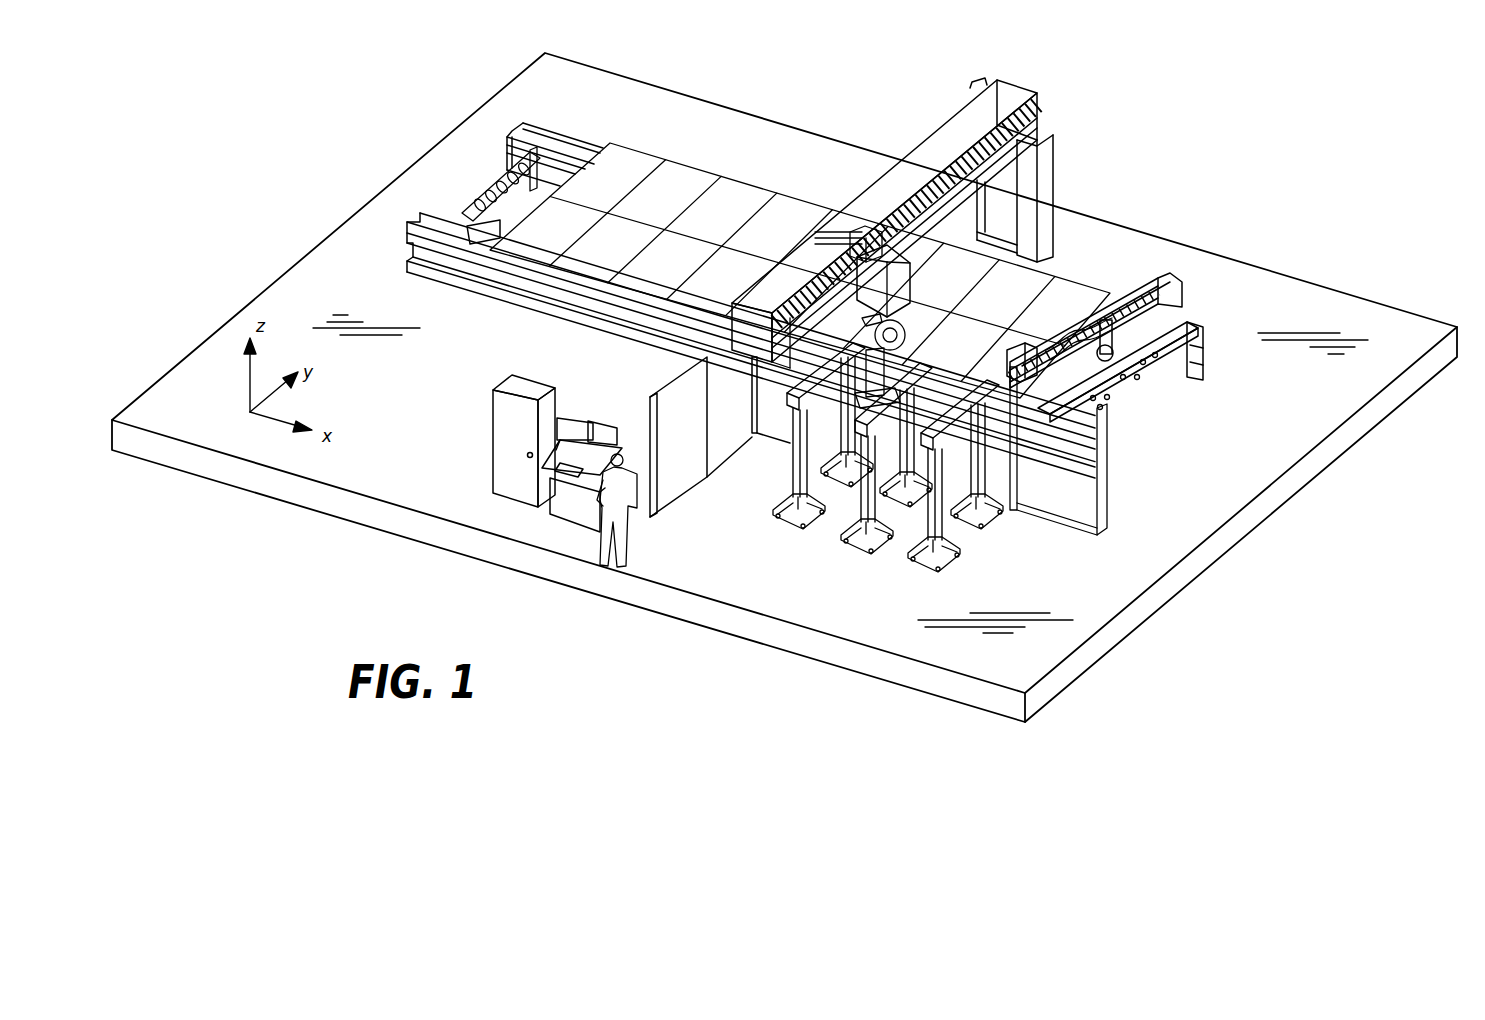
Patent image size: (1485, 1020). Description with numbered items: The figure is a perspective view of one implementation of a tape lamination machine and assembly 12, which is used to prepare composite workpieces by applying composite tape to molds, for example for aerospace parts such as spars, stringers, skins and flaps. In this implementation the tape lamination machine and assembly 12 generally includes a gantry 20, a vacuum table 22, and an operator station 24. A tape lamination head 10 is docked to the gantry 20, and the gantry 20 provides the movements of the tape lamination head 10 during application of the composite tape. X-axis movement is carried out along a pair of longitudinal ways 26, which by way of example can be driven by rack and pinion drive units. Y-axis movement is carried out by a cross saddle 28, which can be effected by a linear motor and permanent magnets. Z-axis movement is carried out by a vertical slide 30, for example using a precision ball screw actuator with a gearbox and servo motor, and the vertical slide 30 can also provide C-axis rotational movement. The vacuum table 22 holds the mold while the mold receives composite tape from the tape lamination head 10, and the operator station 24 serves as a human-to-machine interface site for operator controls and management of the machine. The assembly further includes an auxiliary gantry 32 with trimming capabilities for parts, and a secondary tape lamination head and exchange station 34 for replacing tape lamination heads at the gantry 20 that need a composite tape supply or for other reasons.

The tape lamination head 10 is at (912, 312).
The tape lamination machine and assembly 12 is at (1257, 177).
The gantry 20 is at (946, 122).
The vacuum table 22 is at (757, 183).
The operator station 24 is at (584, 405).
The longitudinal ways 26 is at (584, 143).
The cross saddle 28 is at (878, 185).
The vertical slide 30 is at (905, 258).
The auxiliary gantry 32 is at (1146, 277).
The secondary tape lamination head and exchange station 34 is at (886, 468).